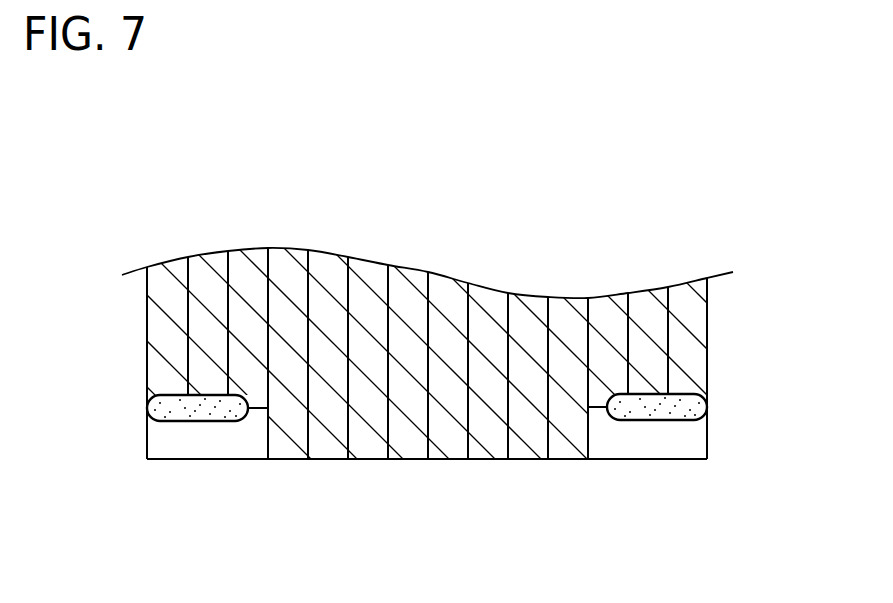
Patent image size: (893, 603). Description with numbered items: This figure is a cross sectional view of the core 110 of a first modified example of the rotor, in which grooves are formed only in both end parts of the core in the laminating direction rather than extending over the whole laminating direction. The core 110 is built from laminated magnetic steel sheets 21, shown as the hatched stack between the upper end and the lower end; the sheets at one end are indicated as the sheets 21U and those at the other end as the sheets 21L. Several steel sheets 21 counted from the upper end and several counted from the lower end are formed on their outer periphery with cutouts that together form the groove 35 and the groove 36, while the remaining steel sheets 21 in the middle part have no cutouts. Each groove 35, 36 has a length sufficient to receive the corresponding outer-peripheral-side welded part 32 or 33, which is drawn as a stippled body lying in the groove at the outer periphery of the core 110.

The magnetic steel sheets 21 is at (285, 448).
The lower-side layer 21L is at (158, 336).
The upper-side layer 21U is at (695, 367).
The core 110 is at (449, 461).
The outer-peripheral-side welded part 33 is at (180, 410).
The groove 36 is at (230, 447).
The outer-peripheral-side welded part 32 is at (682, 415).
The groove 35 is at (617, 445).